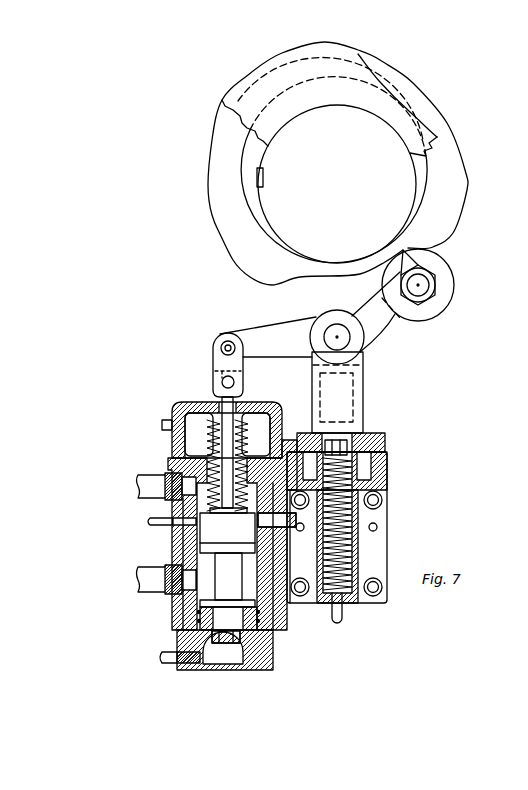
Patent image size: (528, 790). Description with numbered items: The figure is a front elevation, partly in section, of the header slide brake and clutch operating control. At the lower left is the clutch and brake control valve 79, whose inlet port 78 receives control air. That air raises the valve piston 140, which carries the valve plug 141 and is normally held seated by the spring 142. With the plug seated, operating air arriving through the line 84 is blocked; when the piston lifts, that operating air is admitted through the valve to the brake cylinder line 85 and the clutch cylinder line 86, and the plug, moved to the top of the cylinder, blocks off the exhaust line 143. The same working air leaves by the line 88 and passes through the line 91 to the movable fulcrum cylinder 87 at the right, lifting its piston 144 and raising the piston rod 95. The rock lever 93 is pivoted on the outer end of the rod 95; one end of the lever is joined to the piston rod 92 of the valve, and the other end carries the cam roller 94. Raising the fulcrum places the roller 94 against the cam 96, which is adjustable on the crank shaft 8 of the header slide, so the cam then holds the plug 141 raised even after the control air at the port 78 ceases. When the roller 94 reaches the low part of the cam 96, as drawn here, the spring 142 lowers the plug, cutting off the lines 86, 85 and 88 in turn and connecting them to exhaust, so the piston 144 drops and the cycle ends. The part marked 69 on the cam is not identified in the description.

The crank shaft 8 is at (390, 193).
The brake band 69 is at (255, 65).
The inlet port 78 is at (172, 661).
The clutch and brake control valve 79 is at (171, 614).
The line 84 is at (153, 583).
The line 85 is at (148, 522).
The line 86 is at (145, 478).
The movable fulcrum cylinder 87 is at (390, 478).
The line 88 is at (283, 528).
The line 91 is at (338, 627).
The piston rod 92 is at (218, 395).
The rock lever 93 is at (270, 324).
The cam roller 94 is at (442, 293).
The piston rod 95 is at (363, 373).
The cam 96 is at (462, 139).
The valve piston 140 is at (197, 617).
The valve plug 141 is at (190, 540).
The spring 142 is at (207, 430).
The exhaust line 143 is at (162, 425).
The piston 144 is at (385, 452).